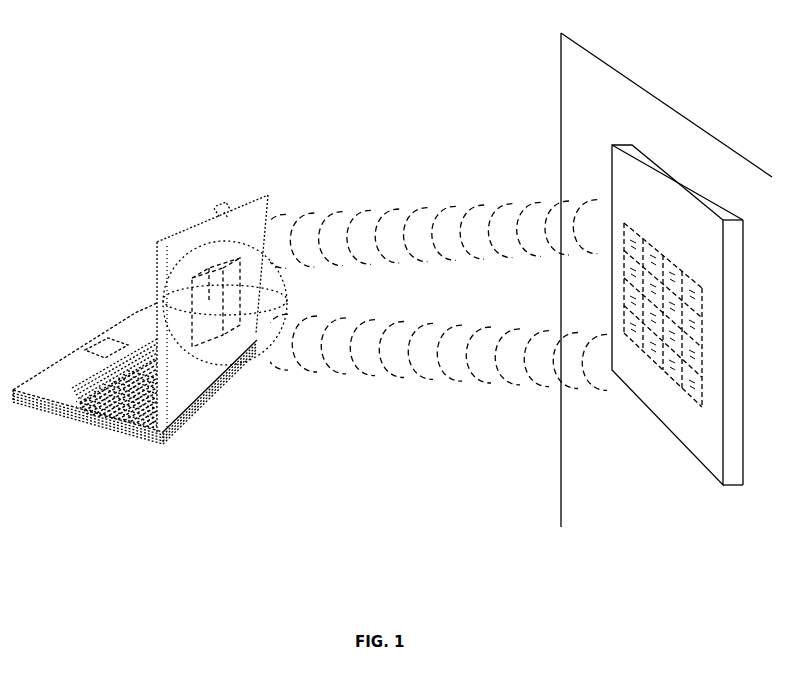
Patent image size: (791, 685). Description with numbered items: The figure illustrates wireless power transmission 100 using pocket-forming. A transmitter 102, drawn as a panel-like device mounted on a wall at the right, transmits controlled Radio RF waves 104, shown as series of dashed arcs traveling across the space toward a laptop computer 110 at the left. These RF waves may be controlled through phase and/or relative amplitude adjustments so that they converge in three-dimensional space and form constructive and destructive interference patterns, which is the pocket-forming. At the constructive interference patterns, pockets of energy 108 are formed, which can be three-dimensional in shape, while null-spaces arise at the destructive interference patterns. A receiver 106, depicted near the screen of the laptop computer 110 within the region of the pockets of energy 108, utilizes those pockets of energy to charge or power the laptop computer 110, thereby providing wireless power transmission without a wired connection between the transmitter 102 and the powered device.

The wireless power transmission 100 is at (130, 110).
The transmitter 102 is at (637, 190).
The Radio RF waves 104 is at (532, 390).
The receiver 106 is at (236, 275).
The pockets of energy 108 is at (200, 365).
The laptop computer 110 is at (57, 388).